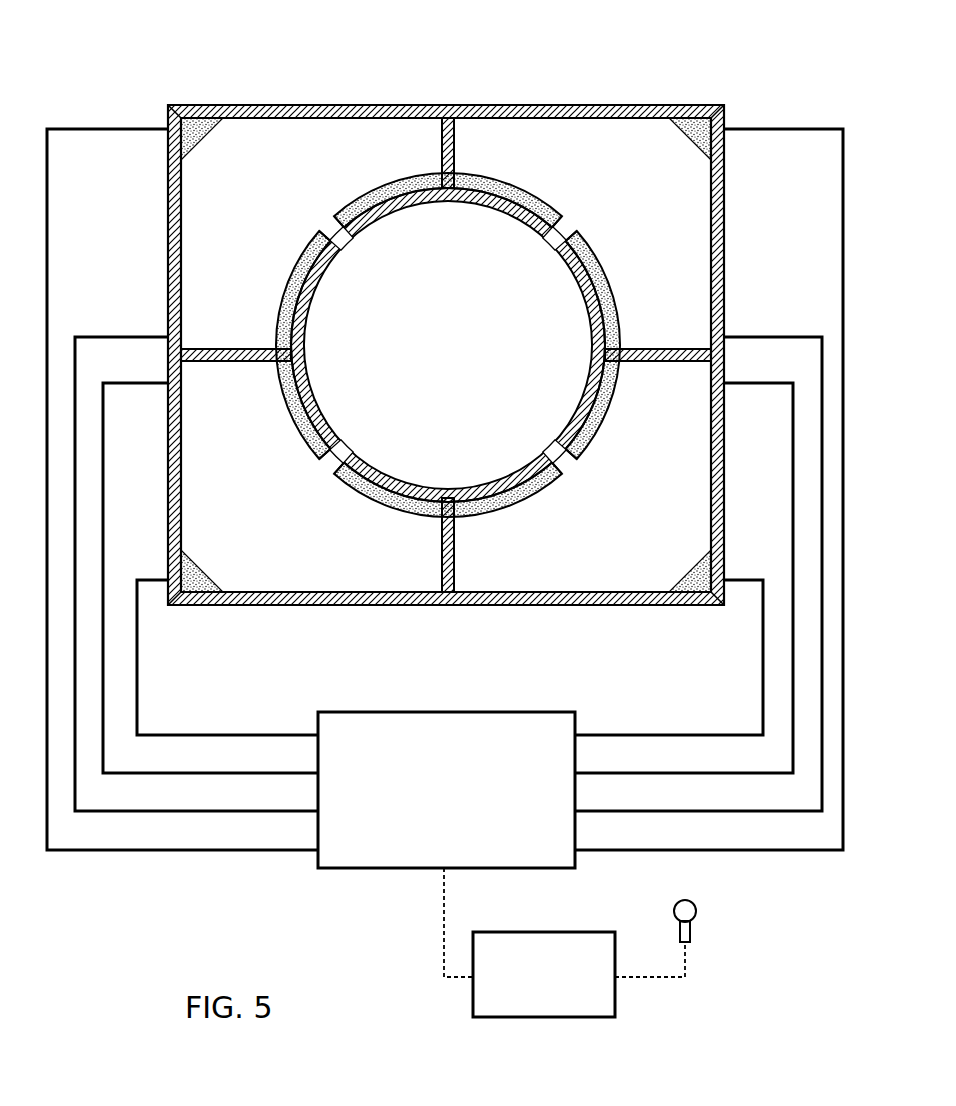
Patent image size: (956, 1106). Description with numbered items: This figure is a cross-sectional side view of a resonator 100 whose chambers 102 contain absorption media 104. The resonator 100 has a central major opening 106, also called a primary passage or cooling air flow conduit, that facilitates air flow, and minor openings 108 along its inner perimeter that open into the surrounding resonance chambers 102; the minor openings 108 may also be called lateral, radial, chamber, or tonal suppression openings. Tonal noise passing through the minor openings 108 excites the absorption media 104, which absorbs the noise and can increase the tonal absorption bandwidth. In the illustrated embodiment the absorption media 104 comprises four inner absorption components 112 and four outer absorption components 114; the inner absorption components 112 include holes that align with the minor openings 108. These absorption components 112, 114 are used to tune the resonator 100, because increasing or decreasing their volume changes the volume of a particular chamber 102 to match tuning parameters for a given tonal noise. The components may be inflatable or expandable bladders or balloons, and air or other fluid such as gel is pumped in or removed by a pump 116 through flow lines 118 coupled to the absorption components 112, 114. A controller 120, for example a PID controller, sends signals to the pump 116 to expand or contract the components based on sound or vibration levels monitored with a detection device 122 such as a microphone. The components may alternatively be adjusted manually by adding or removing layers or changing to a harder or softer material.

The resonator 100 is at (348, 36).
The chambers 102 is at (210, 256).
The absorption media 104 is at (200, 116).
The major opening 106 is at (478, 348).
The minor openings 108 is at (318, 238).
The inner absorption components 112 is at (389, 183).
The outer absorption components 114 is at (192, 140).
The pump 116 is at (482, 710).
The flow lines 118 is at (225, 848).
The controller 120 is at (562, 931).
The detection device 122 is at (682, 897).